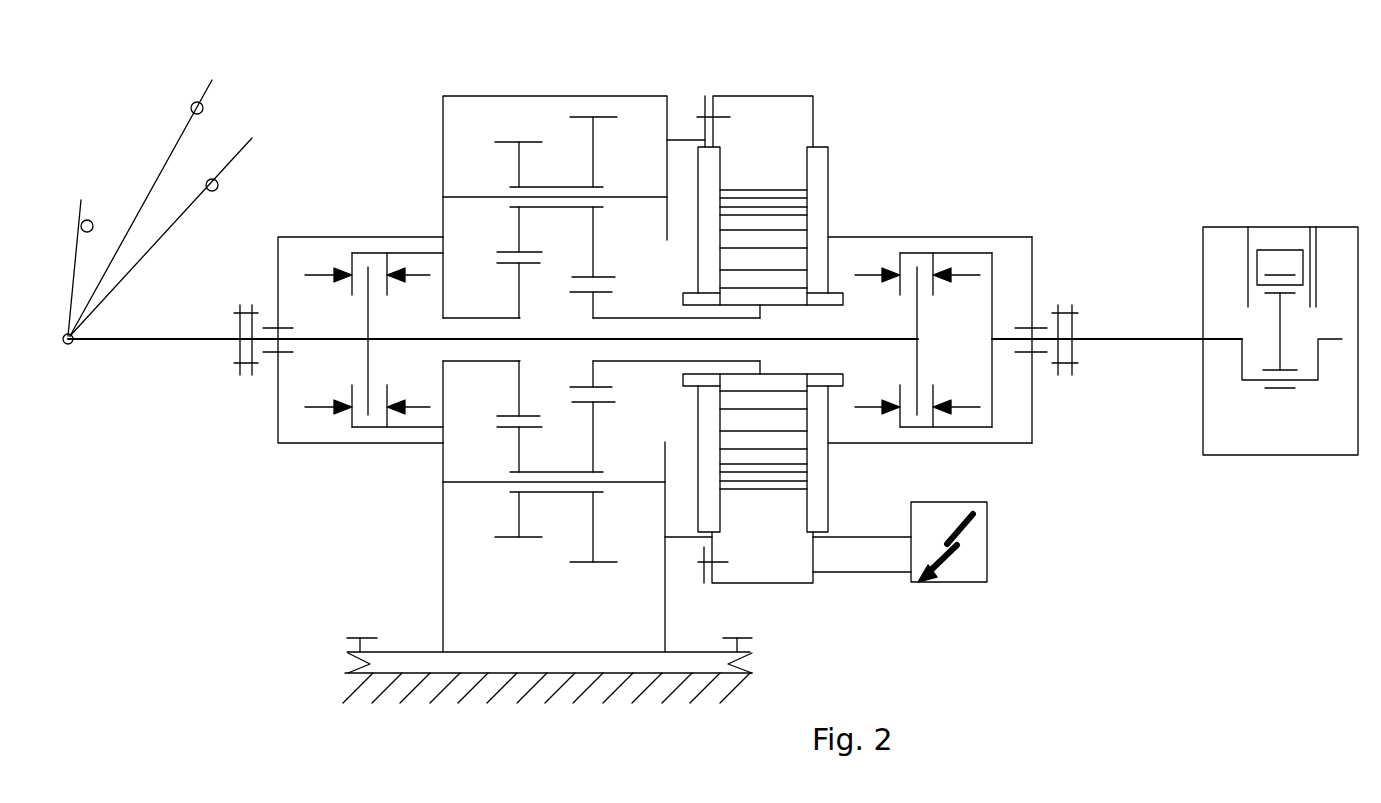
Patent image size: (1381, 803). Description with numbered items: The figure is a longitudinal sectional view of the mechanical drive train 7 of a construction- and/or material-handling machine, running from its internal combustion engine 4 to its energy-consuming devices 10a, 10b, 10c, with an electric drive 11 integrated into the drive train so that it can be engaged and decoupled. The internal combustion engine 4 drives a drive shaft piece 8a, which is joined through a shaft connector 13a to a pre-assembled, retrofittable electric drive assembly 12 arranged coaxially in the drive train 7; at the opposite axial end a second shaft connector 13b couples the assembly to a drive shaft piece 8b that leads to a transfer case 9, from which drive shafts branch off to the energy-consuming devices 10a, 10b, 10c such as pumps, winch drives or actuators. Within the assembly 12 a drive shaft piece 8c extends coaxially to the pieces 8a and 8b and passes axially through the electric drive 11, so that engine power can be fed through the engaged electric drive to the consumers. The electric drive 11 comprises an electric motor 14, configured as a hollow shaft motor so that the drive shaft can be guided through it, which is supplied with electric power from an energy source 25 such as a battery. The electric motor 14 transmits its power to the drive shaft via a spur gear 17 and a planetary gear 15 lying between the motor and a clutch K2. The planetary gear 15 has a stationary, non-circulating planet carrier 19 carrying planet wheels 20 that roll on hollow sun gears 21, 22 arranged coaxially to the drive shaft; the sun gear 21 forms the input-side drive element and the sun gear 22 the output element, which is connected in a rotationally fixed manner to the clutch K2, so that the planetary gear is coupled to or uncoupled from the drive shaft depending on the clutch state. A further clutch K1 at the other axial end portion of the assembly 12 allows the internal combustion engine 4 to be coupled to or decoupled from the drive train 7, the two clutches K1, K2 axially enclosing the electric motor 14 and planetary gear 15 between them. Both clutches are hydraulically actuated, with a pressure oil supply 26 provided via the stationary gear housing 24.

The internal combustion engine 4 is at (1245, 469).
The mechanical drive train 7 is at (1110, 357).
The drive shaft piece 8a is at (1134, 338).
The drive shaft piece 8b is at (157, 336).
The drive shaft piece 8c is at (835, 341).
The transfer case 9 is at (74, 344).
The energy-consuming device 10a is at (85, 255).
The energy-consuming device 10b is at (164, 197).
The energy-consuming device 10c is at (184, 228).
The electric drive 11 is at (849, 173).
The electric drive assembly 12 is at (290, 449).
The shaft connector 13a is at (1070, 333).
The shaft connector 13b is at (238, 350).
The electric motor 14 is at (783, 463).
The planetary gear 15 is at (650, 101).
The spur gear 17 is at (502, 232).
The planet carrier 19 is at (606, 161).
The planet wheels 20 is at (596, 130).
The sun gear 21 is at (604, 297).
The sun gear 22 is at (510, 270).
The gear housing 24 is at (443, 128).
The energy source 25 is at (980, 577).
The pressure oil supply 26 is at (416, 236).
The clutch K1 is at (922, 253).
The clutch K2 is at (352, 253).